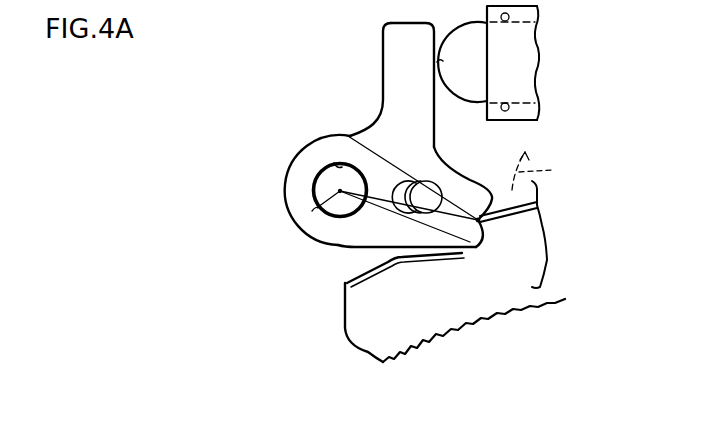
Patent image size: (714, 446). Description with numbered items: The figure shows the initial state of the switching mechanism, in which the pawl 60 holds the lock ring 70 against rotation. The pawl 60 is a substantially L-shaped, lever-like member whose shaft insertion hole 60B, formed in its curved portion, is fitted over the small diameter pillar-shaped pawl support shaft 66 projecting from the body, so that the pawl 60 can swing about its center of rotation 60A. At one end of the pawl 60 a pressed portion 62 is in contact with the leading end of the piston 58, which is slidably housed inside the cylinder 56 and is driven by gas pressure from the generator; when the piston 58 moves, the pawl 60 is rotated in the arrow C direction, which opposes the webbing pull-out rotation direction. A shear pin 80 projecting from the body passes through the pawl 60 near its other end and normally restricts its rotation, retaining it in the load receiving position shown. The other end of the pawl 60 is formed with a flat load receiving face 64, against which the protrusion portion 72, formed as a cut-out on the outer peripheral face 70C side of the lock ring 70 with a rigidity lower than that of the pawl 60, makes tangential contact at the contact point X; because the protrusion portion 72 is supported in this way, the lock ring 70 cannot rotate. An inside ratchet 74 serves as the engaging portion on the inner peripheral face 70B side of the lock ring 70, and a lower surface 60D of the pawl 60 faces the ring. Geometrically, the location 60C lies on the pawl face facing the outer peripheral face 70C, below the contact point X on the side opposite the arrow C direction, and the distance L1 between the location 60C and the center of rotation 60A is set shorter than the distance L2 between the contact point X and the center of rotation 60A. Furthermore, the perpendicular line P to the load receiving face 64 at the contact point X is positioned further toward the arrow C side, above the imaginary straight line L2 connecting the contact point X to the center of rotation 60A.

The cylinder 56 is at (527, 112).
The piston 58 is at (477, 90).
The pawl 60 is at (341, 78).
The center of rotation 60A is at (318, 208).
The shaft insertion hole 60B is at (330, 162).
The location 60C is at (473, 250).
The lower surface of lever arm 60D is at (457, 254).
The pressed portion 62 is at (437, 62).
The load receiving face 64 is at (482, 222).
The pawl support shaft 66 is at (322, 180).
The lock ring 70 is at (357, 303).
The inner peripheral face 70B is at (457, 313).
The outer peripheral face 70C is at (345, 275).
The protrusion portion 72 is at (479, 200).
The inside ratchet 74 is at (492, 300).
The shear pin 80 is at (422, 190).
The perpendicular line P is at (383, 155).
The straight line L1 is at (378, 208).
The straight line L2 is at (385, 201).
The contact point X is at (485, 227).
The arrow C direction C is at (542, 171).